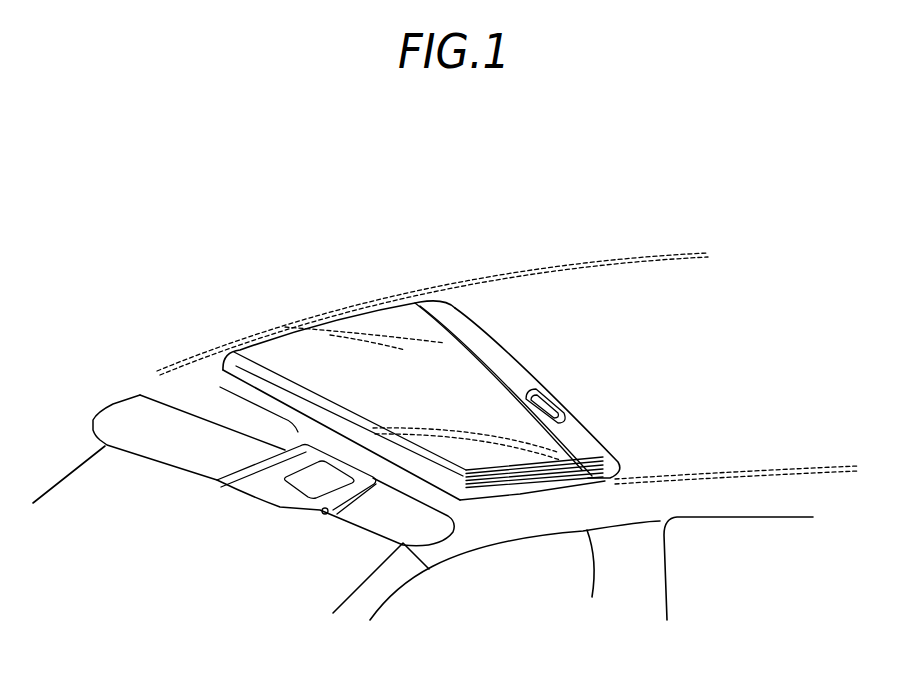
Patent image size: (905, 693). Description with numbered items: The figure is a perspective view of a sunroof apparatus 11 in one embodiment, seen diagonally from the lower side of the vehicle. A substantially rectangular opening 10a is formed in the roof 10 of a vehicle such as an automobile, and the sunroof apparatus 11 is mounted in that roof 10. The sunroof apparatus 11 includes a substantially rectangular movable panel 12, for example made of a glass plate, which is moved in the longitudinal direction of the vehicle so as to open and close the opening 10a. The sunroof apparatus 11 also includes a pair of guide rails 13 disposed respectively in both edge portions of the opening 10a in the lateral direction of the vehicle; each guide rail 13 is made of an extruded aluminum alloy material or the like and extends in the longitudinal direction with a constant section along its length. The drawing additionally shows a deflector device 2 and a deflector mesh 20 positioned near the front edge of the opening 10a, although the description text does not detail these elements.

The deflector device 2 is at (505, 432).
The vehicle roof 10 is at (782, 512).
The roof opening 10a is at (373, 312).
The roof side pillar 11 is at (590, 500).
The sunroof frame panel 12 is at (453, 379).
The roof rail 13 is at (565, 278).
The deflector mesh 20 is at (507, 471).